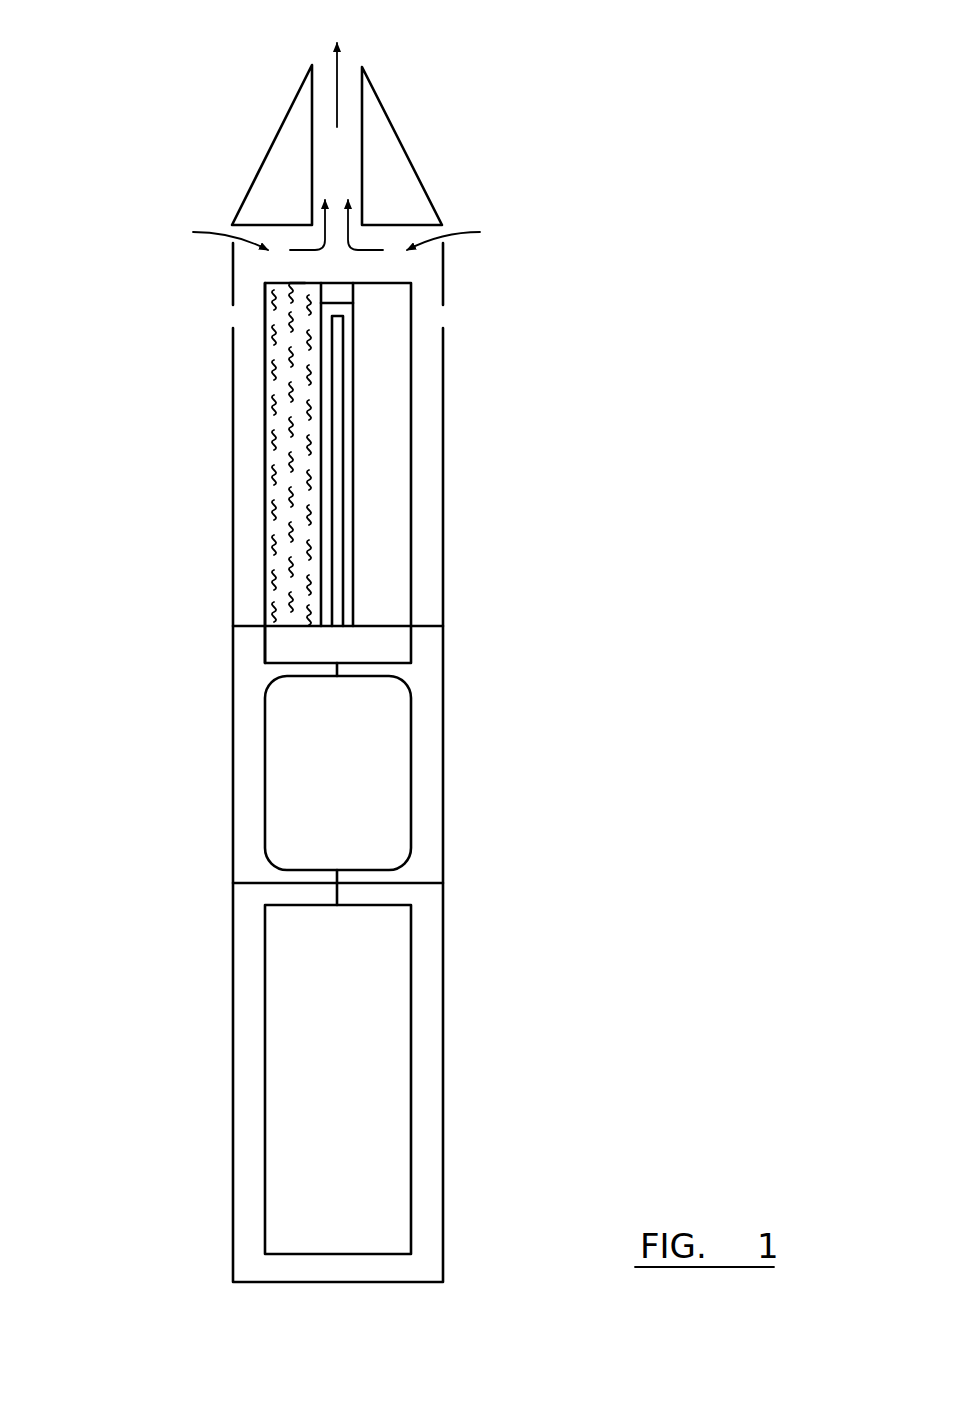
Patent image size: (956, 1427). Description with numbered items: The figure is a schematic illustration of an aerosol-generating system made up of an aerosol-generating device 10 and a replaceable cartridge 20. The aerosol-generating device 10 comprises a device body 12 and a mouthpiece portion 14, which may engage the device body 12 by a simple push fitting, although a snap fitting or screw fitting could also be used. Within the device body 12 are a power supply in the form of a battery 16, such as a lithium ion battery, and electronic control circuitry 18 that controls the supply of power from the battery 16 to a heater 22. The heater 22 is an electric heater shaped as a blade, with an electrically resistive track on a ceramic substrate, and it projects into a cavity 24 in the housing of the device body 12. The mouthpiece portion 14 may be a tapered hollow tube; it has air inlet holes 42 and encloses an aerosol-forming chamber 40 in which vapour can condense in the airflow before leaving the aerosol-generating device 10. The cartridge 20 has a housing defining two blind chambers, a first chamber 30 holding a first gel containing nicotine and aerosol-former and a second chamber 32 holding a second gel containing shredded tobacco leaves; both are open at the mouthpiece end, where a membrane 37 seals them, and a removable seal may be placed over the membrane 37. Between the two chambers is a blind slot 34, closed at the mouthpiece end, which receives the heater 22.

The aerosol-generating device 10 is at (343, 762).
The device body 12 is at (443, 742).
The mouthpiece portion 14 is at (243, 207).
The battery 16 is at (411, 1079).
The electronic control circuitry 18 is at (265, 768).
The cartridge 20 is at (342, 463).
The heater 22 is at (350, 547).
The cavity 24 is at (248, 462).
The first chamber 30 is at (410, 395).
The second chamber 32 is at (265, 552).
The blind slot 34 is at (345, 311).
The membrane 37 is at (297, 283).
The aerosol-forming chamber 40 is at (337, 233).
The air inlet holes 42 is at (227, 226).